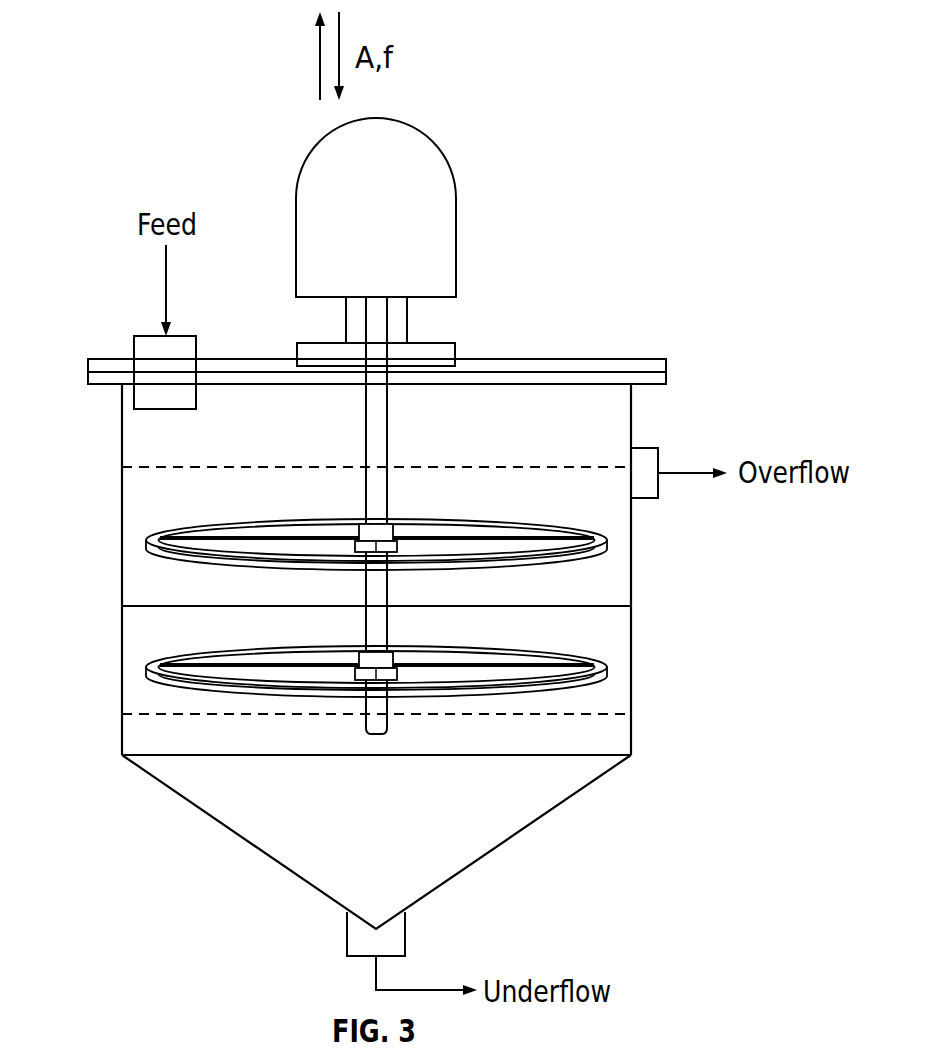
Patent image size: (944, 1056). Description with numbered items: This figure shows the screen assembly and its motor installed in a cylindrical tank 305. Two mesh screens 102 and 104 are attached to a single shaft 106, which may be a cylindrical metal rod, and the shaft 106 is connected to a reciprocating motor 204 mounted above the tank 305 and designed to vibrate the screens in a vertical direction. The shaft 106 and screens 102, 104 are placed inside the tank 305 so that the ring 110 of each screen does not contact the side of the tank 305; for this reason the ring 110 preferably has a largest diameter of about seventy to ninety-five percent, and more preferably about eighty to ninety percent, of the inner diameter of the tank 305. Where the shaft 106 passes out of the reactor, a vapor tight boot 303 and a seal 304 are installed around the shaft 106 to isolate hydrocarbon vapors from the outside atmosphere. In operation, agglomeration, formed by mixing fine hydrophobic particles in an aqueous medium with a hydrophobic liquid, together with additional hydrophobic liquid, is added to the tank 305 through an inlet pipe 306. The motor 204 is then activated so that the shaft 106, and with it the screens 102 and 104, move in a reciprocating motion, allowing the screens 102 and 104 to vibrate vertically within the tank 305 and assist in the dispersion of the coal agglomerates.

The mesh screen 102 is at (328, 532).
The mesh screen 104 is at (147, 672).
The shaft 106 is at (388, 443).
The ring 110 is at (212, 528).
The reciprocating motor 204 is at (455, 180).
The vapor tight boot 303 is at (407, 330).
The seal 304 is at (455, 350).
The tank 305 is at (632, 677).
The inlet pipe 306 is at (134, 345).